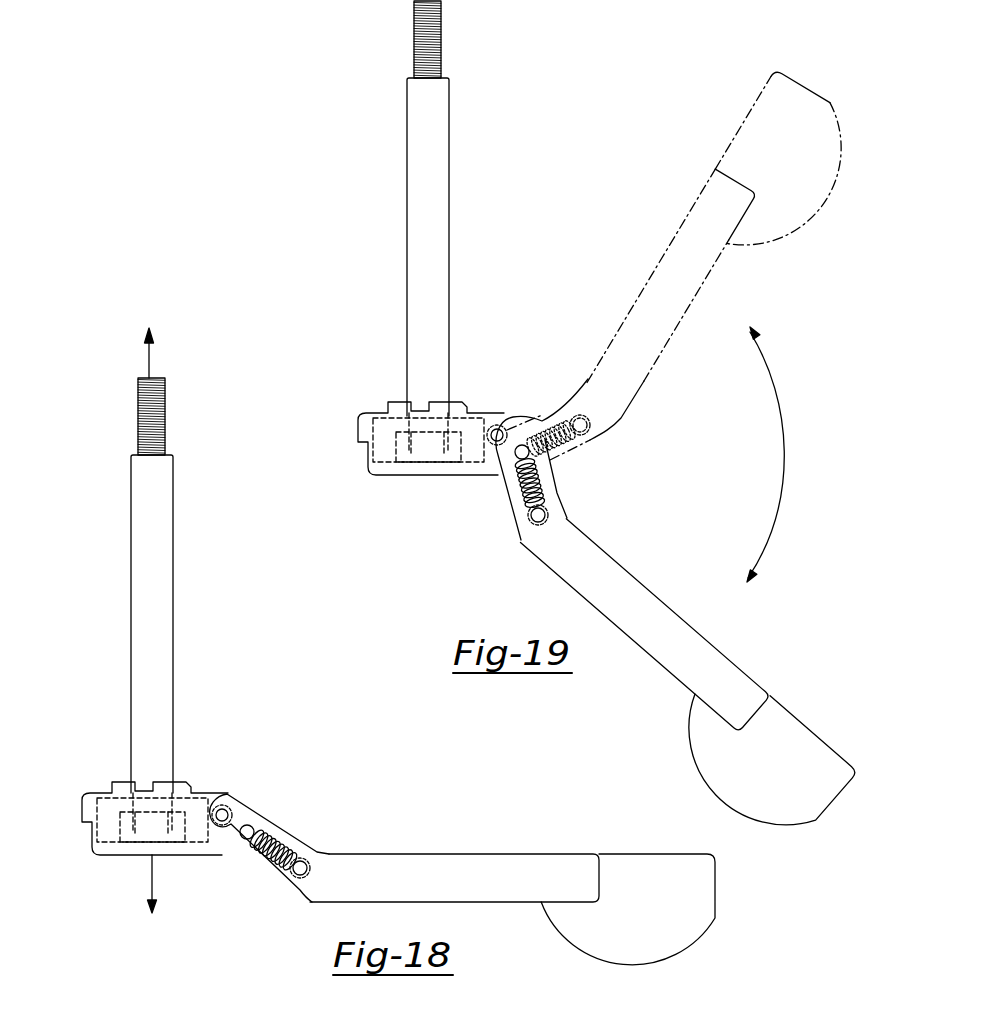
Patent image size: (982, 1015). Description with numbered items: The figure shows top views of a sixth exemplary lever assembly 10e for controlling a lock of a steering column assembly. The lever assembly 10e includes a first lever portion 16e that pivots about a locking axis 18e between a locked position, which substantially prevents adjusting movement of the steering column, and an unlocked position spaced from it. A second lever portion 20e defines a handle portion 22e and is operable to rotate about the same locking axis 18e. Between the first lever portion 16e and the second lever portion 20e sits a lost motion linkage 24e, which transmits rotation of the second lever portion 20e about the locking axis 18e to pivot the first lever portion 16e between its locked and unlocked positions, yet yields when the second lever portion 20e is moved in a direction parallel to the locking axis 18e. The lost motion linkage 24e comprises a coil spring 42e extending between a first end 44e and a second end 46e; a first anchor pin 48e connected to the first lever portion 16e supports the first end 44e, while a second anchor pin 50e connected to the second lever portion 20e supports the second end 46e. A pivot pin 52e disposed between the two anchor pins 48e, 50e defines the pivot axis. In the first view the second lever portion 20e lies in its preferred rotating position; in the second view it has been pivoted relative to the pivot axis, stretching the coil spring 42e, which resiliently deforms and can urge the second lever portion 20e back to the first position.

In FIG. 18, the lever assembly 10e is at (96, 540).
In FIG. 18, the first lever portion 16e is at (88, 862).
In FIG. 19, the first lever portion 16e is at (370, 401).
In FIG. 18, the locking axis 18e is at (150, 360).
In FIG. 19, the locking axis 18e is at (428, 208).
In FIG. 18, the second lever portion 20e is at (432, 850).
In FIG. 19, the second lever portion 20e is at (714, 626).
In FIG. 18, the handle portion 22e is at (677, 937).
In FIG. 19, the handle portion 22e is at (803, 793).
In FIG. 18, the lost motion linkage 24e is at (274, 754).
In FIG. 18, the coil spring 42e is at (383, 1014).
In FIG. 19, the coil spring 42e is at (553, 418).
In FIG. 18, the first end 44e is at (222, 806).
In FIG. 19, the first end 44e is at (497, 427).
In FIG. 18, the second end 46e is at (300, 892).
In FIG. 18, the first anchor pin 48e is at (222, 822).
In FIG. 18, the second anchor pin 50e is at (305, 864).
In FIG. 18, the pivot pin 52e is at (252, 828).